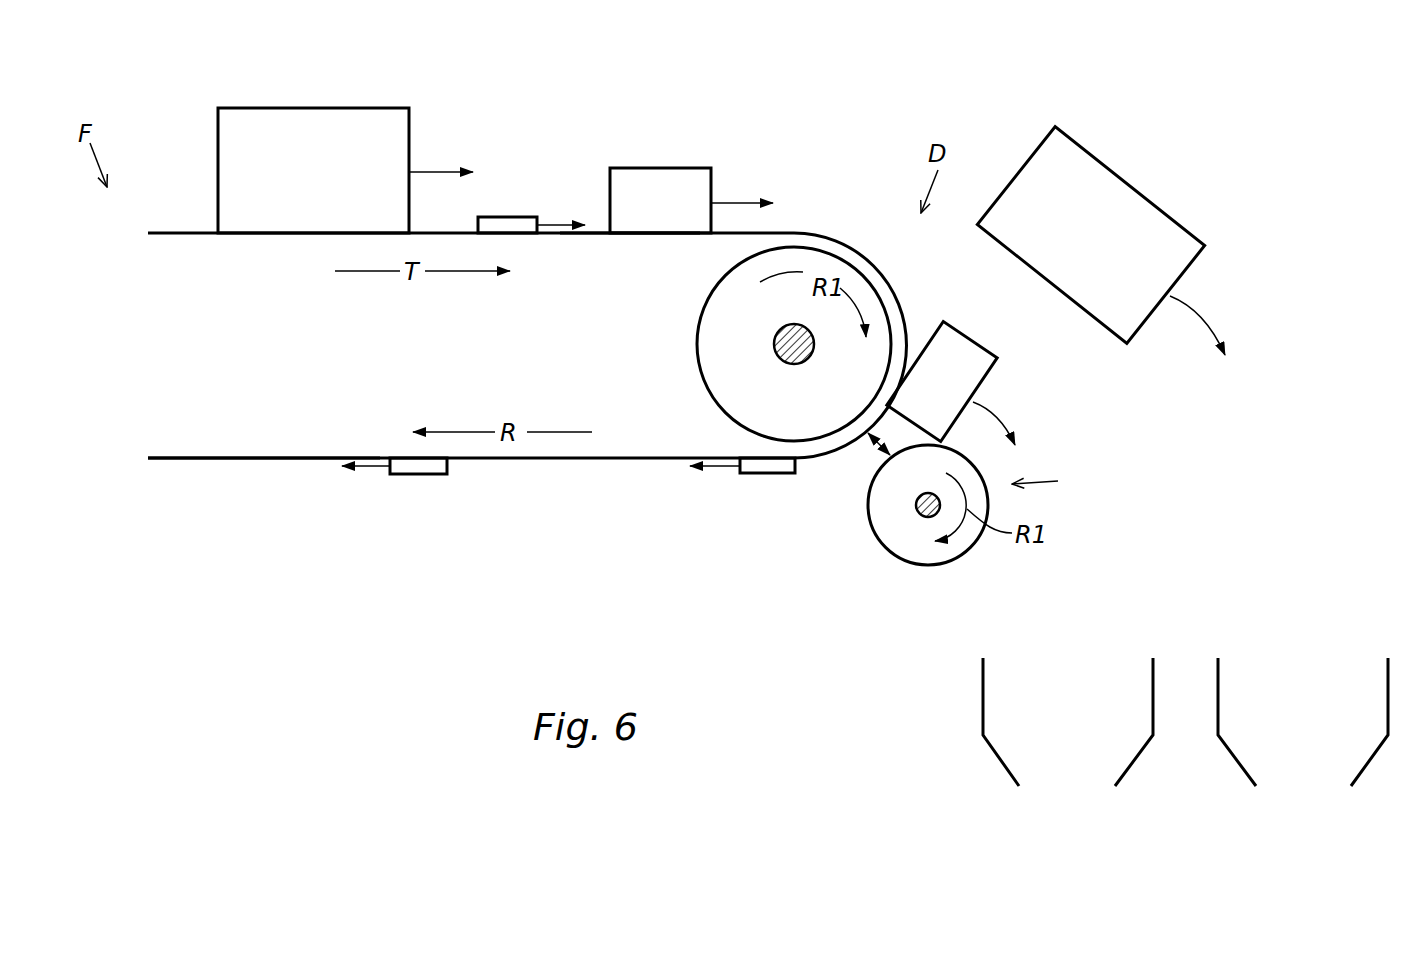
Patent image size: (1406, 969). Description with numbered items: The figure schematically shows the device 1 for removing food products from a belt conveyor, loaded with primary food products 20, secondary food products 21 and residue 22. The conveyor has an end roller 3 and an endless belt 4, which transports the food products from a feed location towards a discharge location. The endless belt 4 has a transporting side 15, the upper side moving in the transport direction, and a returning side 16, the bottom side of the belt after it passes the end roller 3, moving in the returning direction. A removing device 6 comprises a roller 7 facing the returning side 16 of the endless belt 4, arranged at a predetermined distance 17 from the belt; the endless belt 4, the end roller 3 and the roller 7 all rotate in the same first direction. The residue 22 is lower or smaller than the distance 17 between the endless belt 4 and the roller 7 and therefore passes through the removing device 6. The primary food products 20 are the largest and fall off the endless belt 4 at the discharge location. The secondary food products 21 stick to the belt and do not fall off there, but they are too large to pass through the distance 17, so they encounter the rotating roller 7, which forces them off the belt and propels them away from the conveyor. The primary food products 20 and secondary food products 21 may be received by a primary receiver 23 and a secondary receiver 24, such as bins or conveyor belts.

The device 1 is at (1303, 132).
The end roller 3 is at (708, 340).
The endless belt 4 is at (165, 238).
The removing device 6 is at (1044, 479).
The roller 7 is at (902, 542).
The transporting side 15 is at (593, 238).
The returning side 16 is at (312, 455).
The predetermined distance 17 is at (877, 447).
The primary food products 20 is at (312, 115).
The secondary food products 21 is at (661, 178).
The residue 22 is at (510, 222).
The primary receiver 23 is at (1070, 779).
The secondary receiver 24 is at (1306, 779).